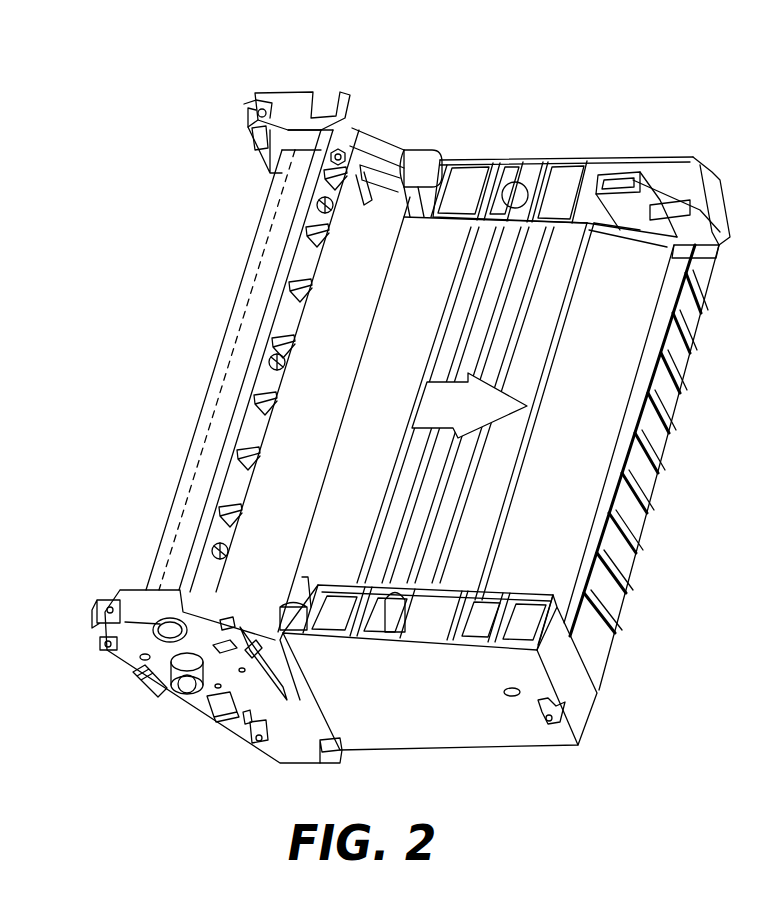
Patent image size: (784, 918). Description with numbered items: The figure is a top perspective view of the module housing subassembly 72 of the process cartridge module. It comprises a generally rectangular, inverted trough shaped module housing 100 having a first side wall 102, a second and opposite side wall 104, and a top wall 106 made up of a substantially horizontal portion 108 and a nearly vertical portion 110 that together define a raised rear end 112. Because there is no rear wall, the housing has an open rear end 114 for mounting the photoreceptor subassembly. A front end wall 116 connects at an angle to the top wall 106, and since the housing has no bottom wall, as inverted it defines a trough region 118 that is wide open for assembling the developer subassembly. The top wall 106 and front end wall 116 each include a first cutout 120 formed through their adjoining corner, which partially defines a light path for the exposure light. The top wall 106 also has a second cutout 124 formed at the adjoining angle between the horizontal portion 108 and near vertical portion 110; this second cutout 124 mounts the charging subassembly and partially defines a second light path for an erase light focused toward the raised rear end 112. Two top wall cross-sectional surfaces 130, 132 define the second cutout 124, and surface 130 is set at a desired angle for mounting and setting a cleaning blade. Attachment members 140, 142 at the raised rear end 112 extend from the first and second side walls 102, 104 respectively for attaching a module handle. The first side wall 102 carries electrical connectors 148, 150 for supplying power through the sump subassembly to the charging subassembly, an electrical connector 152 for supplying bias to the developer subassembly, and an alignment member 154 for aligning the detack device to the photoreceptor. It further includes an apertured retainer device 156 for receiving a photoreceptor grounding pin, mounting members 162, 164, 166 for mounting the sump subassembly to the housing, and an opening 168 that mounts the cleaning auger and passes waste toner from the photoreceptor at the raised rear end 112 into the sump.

The module housing subassembly 72 is at (410, 68).
The module housing 100 is at (661, 137).
The first side wall 102 is at (462, 720).
The second side wall 104 is at (576, 157).
The top wall 106 is at (434, 248).
The substantially horizontal portion 108 is at (484, 490).
The nearly vertical portion 110 is at (250, 352).
The raised rear end 112 is at (245, 278).
The open rear end 114 is at (352, 195).
The front end wall 116 is at (651, 476).
The trough region 118 is at (624, 328).
The first cutout 120 is at (583, 487).
The second cutout 124 is at (295, 445).
The top wall cross-sectional surface 130 is at (318, 272).
The top wall cross-sectional surface 132 is at (313, 505).
The attachment member 140 is at (100, 612).
The attachment member 142 is at (254, 117).
The electrical connector 148 is at (232, 643).
The electrical connector 150 is at (263, 676).
The electrical connector 152 is at (226, 718).
The alignment member 154 is at (140, 686).
The apertured retainer device 156 is at (184, 684).
The mounting member 162 is at (100, 646).
The mounting member 164 is at (259, 742).
The mounting member 166 is at (560, 722).
The opening 168 is at (165, 625).